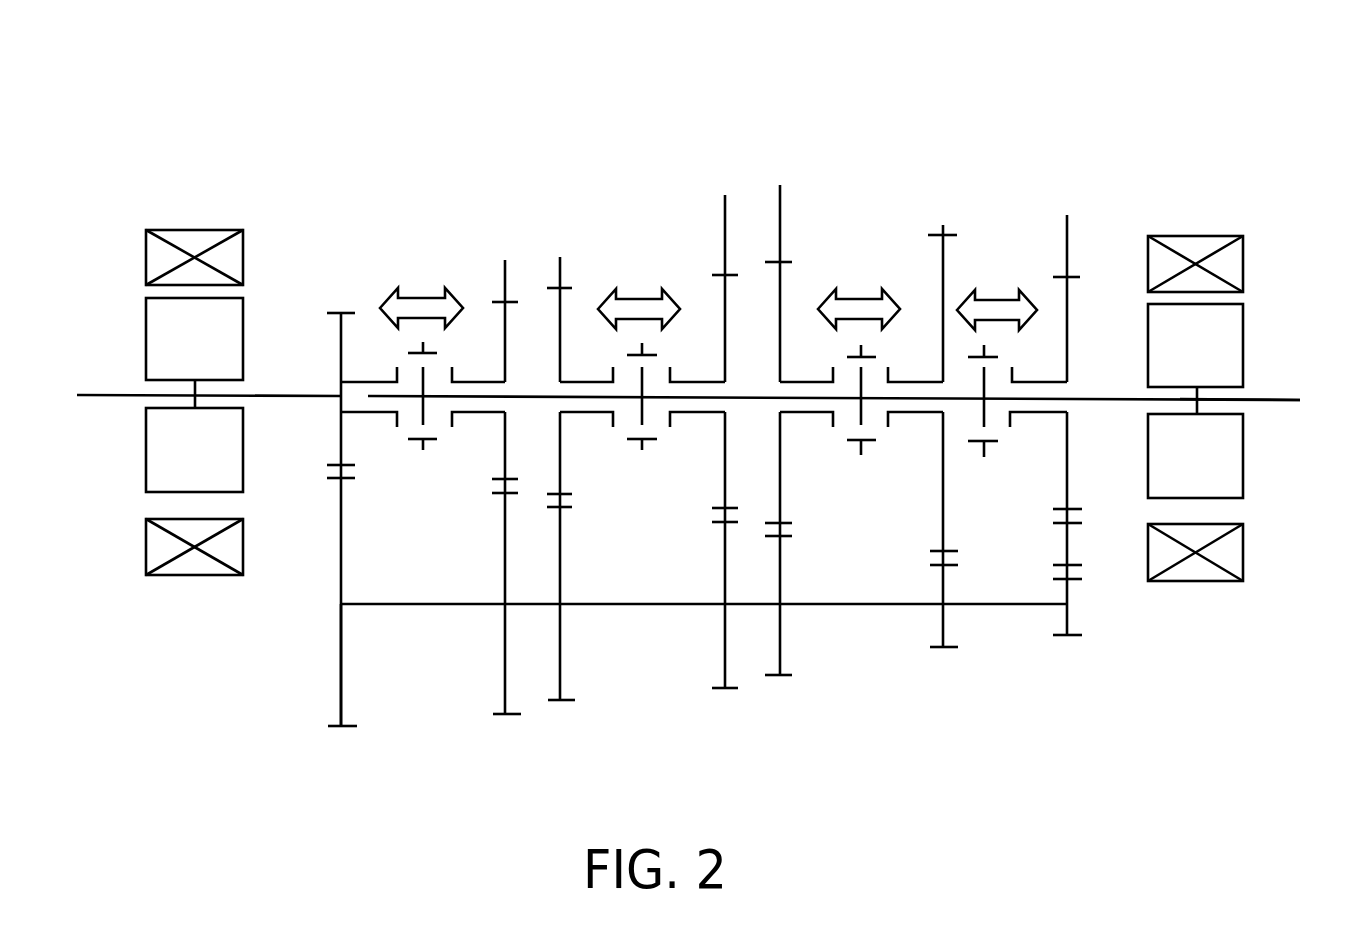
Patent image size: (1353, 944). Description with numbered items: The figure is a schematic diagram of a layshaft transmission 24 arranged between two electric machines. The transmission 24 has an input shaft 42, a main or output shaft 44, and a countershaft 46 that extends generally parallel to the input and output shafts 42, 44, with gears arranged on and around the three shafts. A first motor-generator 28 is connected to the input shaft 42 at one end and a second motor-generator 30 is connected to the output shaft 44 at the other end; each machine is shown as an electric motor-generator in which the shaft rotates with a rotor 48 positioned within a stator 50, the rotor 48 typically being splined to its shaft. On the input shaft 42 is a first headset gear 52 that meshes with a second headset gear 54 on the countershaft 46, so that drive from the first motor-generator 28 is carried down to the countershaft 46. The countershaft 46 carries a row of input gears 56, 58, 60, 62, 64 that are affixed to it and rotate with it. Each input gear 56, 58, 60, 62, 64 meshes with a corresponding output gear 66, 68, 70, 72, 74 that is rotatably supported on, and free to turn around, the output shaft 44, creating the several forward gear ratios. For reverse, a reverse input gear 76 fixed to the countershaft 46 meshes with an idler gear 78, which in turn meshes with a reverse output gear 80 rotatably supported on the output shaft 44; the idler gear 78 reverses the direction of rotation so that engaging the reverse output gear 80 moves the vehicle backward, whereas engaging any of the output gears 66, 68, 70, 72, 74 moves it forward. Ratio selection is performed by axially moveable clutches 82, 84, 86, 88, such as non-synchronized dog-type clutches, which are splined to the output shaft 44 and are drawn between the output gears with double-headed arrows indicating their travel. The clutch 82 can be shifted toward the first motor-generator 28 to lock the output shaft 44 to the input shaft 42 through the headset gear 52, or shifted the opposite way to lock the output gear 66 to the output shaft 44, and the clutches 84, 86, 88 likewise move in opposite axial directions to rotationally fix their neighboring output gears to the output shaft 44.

The transmission 24 is at (928, 150).
The first motor-generator 28 is at (175, 227).
The second motor-generator 30 is at (1177, 233).
The input shaft 42 is at (120, 396).
The output shaft 44 is at (1258, 401).
The countershaft 46 is at (877, 605).
The rotor 48 is at (146, 362).
The stator 50 is at (243, 257).
The first headset gear 52 is at (341, 313).
The second headset gear 54 is at (342, 616).
The input gear 56 is at (507, 616).
The input gear 58 is at (562, 616).
The input gear 60 is at (723, 645).
The input gear 62 is at (780, 618).
The input gear 64 is at (943, 619).
The output gear 66 is at (505, 262).
The output gear 68 is at (560, 259).
The output gear 70 is at (725, 200).
The output gear 72 is at (780, 190).
The output gear 74 is at (943, 225).
The reverse input gear 76 is at (1067, 592).
The idler gear 78 is at (1067, 552).
The reverse output gear 80 is at (1067, 217).
The clutch 82 is at (424, 455).
The clutch 84 is at (642, 457).
The clutch 86 is at (861, 457).
The clutch 88 is at (983, 468).